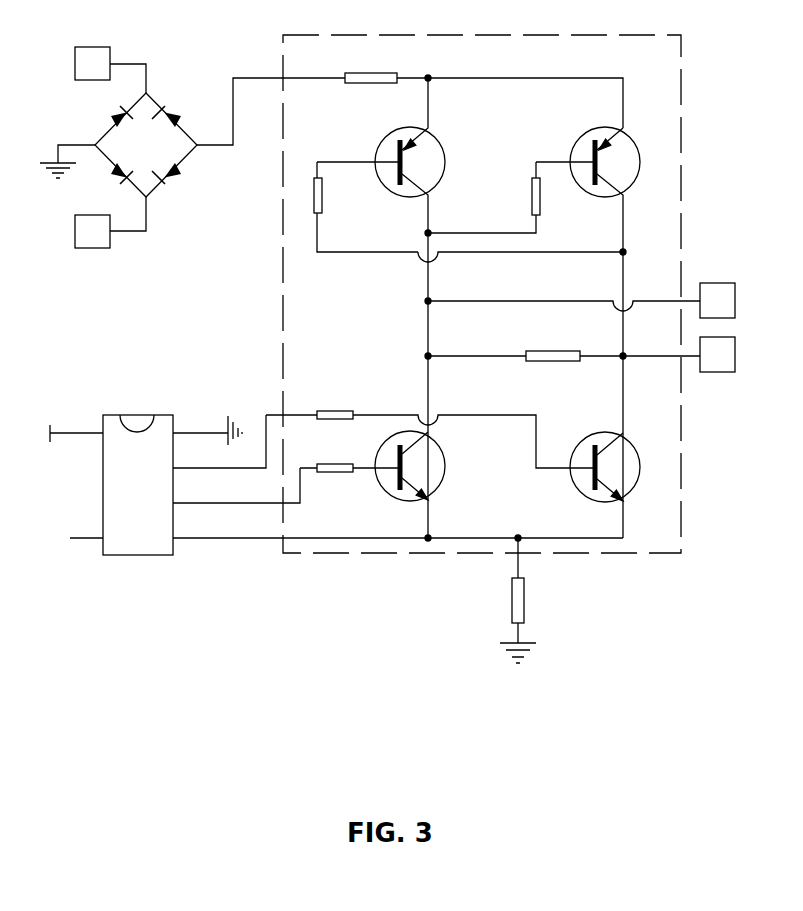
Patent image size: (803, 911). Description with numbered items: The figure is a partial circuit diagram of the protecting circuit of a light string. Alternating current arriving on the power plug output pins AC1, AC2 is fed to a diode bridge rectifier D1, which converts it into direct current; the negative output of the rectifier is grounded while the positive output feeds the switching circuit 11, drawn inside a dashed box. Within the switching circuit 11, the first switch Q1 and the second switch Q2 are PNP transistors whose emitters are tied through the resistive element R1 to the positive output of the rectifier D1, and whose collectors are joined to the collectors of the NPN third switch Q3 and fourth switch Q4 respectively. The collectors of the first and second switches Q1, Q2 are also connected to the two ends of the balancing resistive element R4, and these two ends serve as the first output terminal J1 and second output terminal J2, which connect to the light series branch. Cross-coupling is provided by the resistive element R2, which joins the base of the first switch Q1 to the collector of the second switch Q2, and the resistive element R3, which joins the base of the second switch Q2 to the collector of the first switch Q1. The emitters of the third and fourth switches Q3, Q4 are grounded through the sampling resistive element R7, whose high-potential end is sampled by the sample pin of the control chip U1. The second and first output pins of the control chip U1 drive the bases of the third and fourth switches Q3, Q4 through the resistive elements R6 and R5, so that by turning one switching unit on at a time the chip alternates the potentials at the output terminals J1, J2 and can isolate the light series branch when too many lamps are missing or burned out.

The switching circuit 11 is at (660, 217).
The output pin of the power plug AC1 is at (87, 70).
The output pin of the power plug AC2 is at (87, 222).
The diode bridge rectifier D1 is at (151, 142).
The resistive element R1 is at (371, 66).
The resistive element R2 is at (366, 207).
The resistive element R3 is at (501, 197).
The balancing resistive element R4 is at (564, 343).
The resistive element R5 is at (429, 425).
The resistive element R6 is at (349, 453).
The sampling resistive element R7 is at (530, 600).
The first switch Q1 is at (423, 155).
The second switch Q2 is at (618, 189).
The third switch Q3 is at (421, 466).
The fourth switch Q4 is at (616, 466).
The control chip U1 is at (152, 472).
The first output terminal J1 is at (728, 300).
The second output terminal J2 is at (728, 354).